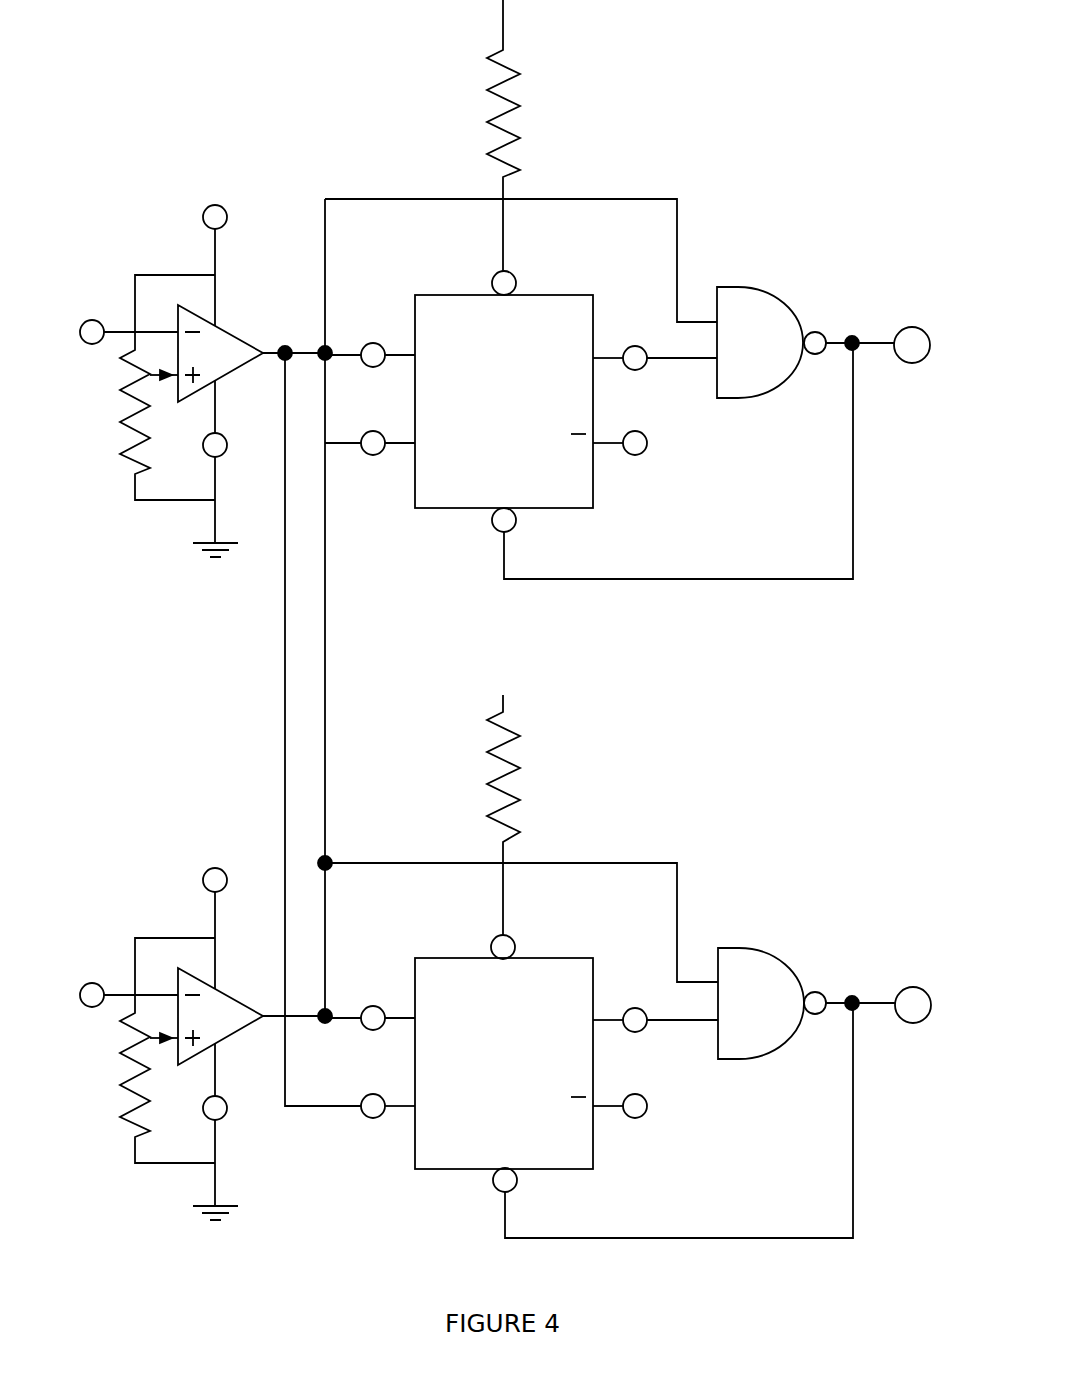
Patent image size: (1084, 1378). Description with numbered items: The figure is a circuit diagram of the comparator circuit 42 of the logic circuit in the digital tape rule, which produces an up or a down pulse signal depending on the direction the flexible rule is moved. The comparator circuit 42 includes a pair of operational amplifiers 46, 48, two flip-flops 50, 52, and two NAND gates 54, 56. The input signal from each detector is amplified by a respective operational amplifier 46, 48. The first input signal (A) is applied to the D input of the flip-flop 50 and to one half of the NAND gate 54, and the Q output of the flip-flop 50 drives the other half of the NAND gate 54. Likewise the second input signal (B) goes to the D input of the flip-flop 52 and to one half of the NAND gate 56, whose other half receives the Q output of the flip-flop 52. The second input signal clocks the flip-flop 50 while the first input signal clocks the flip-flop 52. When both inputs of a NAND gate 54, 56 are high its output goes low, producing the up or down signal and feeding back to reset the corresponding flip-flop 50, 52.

The comparator circuit 42 is at (365, 105).
The operational amplifier 46 is at (165, 1190).
The operational amplifier 48 is at (168, 522).
The flip-flop 50 is at (572, 1147).
The flip-flop 52 is at (575, 485).
The NAND gate 54 is at (768, 930).
The NAND gate 56 is at (772, 270).